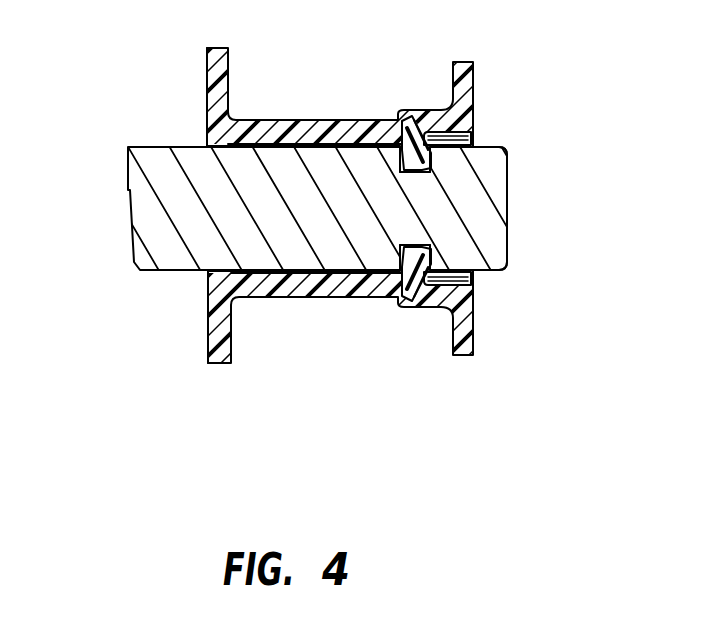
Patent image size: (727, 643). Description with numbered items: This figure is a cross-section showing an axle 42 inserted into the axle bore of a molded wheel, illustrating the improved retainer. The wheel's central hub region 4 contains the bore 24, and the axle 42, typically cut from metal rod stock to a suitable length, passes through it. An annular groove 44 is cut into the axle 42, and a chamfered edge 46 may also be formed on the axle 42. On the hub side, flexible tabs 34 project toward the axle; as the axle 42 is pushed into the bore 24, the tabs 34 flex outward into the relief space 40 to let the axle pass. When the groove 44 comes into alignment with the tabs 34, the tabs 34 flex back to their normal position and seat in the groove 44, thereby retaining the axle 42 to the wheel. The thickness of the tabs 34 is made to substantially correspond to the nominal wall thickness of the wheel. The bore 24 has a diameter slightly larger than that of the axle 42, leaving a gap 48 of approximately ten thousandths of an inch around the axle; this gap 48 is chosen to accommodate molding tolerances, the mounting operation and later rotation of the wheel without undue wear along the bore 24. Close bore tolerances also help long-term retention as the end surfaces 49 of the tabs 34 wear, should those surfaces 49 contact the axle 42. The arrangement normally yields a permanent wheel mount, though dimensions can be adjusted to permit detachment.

The central hub region 4 is at (207, 60).
The bore 24 is at (207, 146).
The tabs 34 is at (404, 150).
The relief space 40 is at (473, 140).
The axle 42 is at (128, 190).
The annular groove 44 is at (420, 241).
The chamfered edge 46 is at (508, 150).
The gap 48 is at (208, 272).
The end surfaces 49 is at (423, 166).